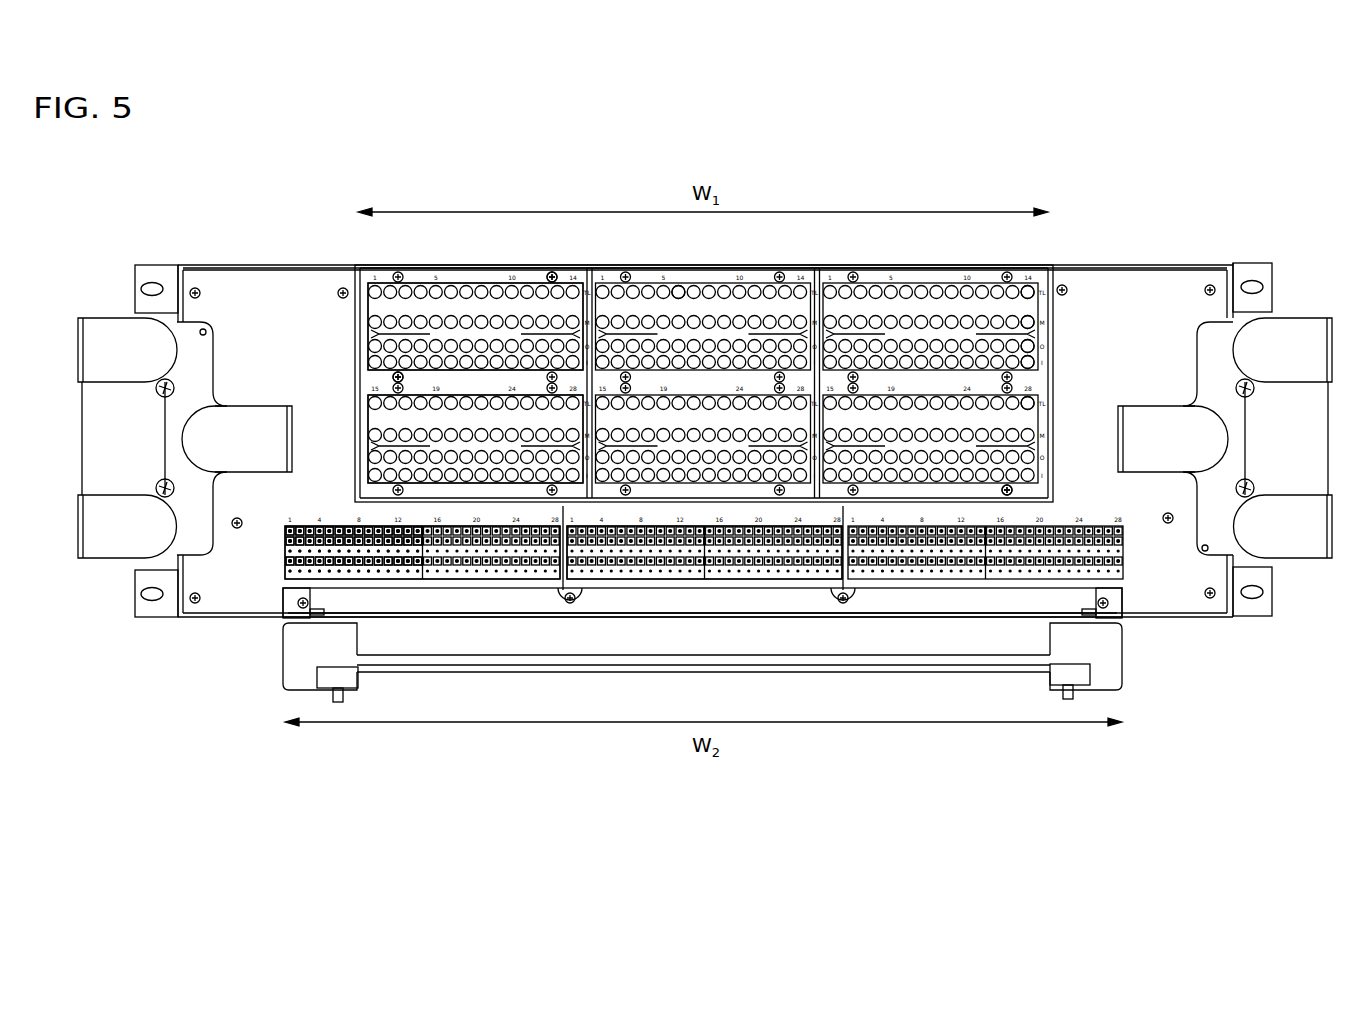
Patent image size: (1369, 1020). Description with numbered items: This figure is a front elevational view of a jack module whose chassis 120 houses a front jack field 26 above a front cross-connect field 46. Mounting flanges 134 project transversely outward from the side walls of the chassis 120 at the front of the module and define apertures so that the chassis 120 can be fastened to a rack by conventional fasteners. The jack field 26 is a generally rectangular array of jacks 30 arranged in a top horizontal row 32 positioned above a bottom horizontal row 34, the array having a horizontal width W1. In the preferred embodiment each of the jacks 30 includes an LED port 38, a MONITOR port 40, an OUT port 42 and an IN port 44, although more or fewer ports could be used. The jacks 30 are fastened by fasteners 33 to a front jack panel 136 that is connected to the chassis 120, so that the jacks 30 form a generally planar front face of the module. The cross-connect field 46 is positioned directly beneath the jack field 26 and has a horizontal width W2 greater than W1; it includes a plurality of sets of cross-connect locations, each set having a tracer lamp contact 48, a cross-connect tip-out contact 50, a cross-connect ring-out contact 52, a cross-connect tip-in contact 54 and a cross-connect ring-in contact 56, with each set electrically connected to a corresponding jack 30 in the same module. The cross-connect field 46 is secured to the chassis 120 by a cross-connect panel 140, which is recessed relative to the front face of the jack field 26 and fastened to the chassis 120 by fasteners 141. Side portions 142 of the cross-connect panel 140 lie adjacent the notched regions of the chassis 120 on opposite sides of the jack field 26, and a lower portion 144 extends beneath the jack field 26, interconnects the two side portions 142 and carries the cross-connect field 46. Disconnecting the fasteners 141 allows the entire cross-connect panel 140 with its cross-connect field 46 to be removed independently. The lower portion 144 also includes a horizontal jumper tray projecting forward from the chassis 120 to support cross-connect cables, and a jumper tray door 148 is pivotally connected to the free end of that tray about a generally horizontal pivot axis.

The chassis 120 is at (1165, 256).
The side portions of the cross-connect panel 142 is at (272, 280).
The mounting flanges 134 is at (147, 263).
The fasteners 141 is at (201, 286).
The front jack field 26 is at (343, 324).
The top horizontal row 32 is at (338, 356).
The bottom horizontal row 34 is at (350, 452).
The front jack panel 136 is at (374, 378).
The jacks 30 is at (680, 287).
The fasteners 33 is at (552, 271).
The LED port 38 is at (1037, 286).
The MONITOR port 40 is at (1034, 322).
The OUT port 42 is at (1034, 346).
The IN port 44 is at (1034, 362).
The front cross-connect field 46 is at (281, 584).
The tracer lamp contact 48 is at (285, 530).
The cross-connect tip-out contact 50 is at (285, 543).
The cross-connect ring-out contact 52 is at (288, 553).
The cross-connect tip-in contact 54 is at (298, 567).
The cross-connect ring-in contact 56 is at (287, 574).
The lower portion of the cross-connect panel 144 is at (758, 508).
The cross-connect panel 140 is at (1173, 590).
The jumper tray door 148 is at (928, 671).